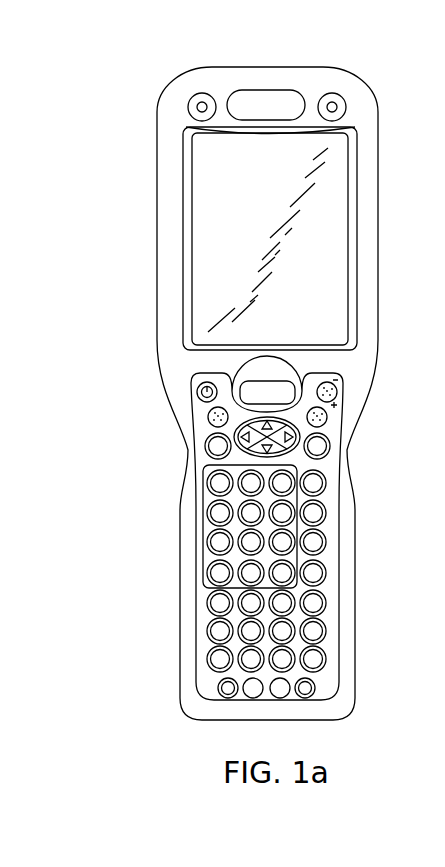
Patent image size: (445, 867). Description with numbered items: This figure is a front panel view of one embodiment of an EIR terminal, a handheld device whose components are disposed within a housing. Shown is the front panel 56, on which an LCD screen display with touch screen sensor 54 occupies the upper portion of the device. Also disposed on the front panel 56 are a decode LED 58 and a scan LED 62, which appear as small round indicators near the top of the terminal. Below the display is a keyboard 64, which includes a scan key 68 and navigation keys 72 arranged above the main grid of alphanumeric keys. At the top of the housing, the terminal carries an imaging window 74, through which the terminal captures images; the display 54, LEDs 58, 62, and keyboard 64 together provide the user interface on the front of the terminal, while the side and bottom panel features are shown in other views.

The LCD screen display with touch screen sensor 54 is at (213, 256).
The front panel 56 is at (172, 197).
The decode LED 58 is at (190, 101).
The scan LED 62 is at (343, 96).
The keyboard 64 is at (223, 528).
The scan key 68 is at (241, 384).
The navigation keys 72 is at (234, 432).
The imaging window 74 is at (266, 66).